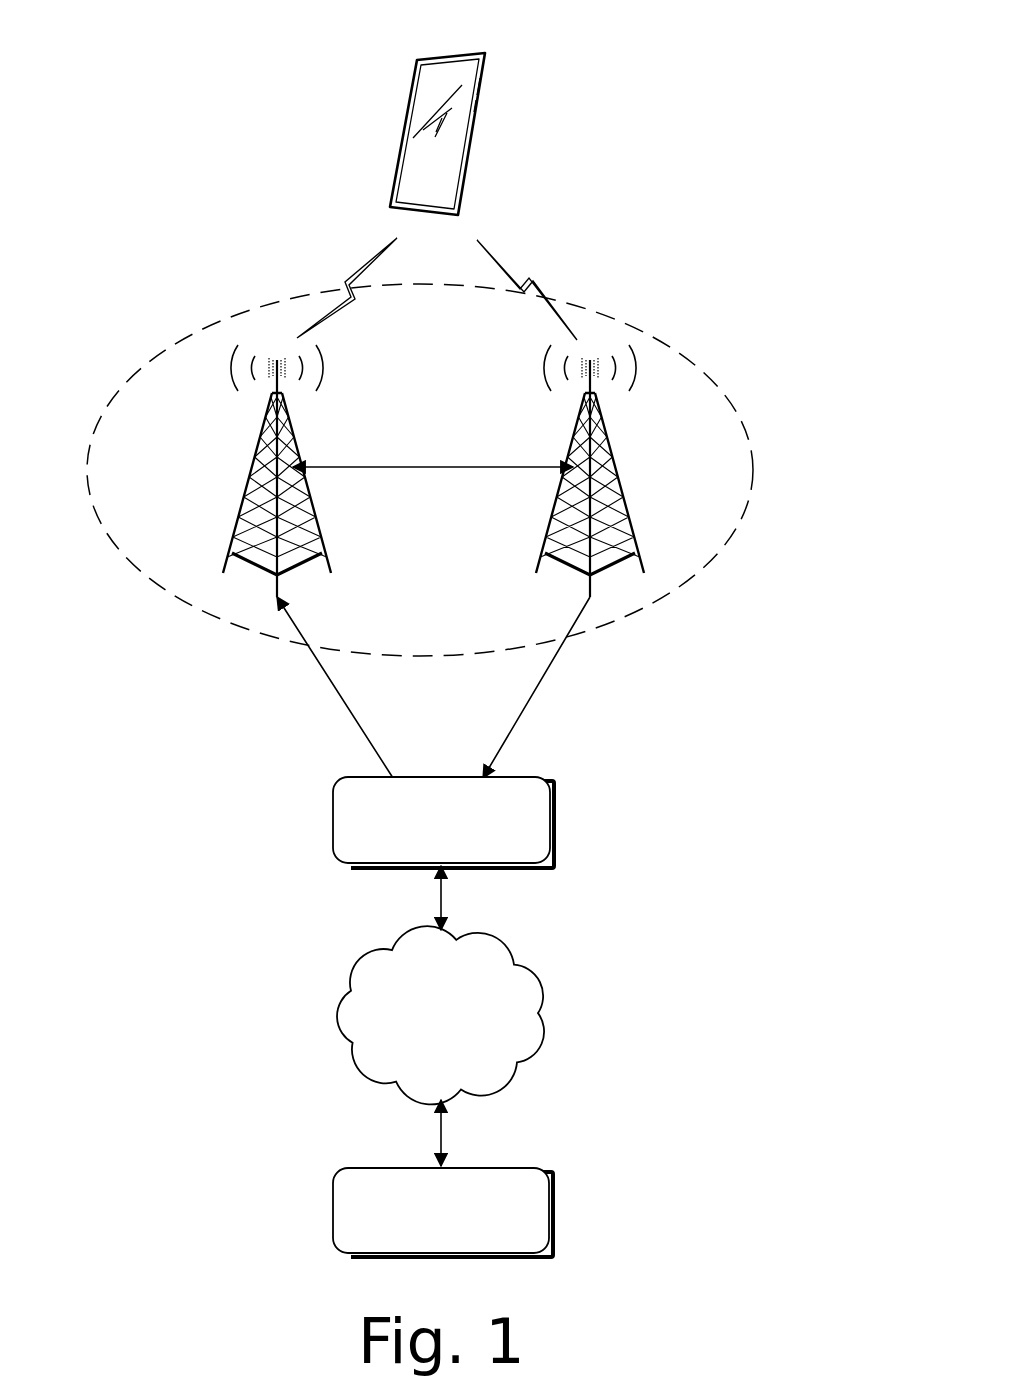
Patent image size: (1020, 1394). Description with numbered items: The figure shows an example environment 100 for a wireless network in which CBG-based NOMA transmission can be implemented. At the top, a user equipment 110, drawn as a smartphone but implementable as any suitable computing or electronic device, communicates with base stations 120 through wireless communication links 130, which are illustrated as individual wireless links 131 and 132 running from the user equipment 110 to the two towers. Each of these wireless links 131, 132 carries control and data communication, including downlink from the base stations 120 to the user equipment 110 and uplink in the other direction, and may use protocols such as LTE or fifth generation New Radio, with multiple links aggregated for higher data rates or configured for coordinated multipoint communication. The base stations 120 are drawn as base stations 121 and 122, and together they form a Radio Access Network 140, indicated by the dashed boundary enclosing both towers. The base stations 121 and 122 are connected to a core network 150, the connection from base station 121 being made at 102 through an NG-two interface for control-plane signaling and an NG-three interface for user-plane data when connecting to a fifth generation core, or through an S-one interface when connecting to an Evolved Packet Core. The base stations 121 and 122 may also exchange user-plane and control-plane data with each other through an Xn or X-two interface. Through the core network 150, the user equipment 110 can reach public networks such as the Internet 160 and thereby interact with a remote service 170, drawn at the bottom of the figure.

The environment 100 is at (773, 52).
The user equipment 110 is at (487, 54).
The wireless communication links 130 is at (538, 206).
The wireless link 131 is at (346, 266).
The wireless link 132 is at (521, 271).
The Radio Access Network 140 is at (731, 392).
The base stations 120 is at (409, 471).
The base station 121 is at (262, 446).
The base station 122 is at (603, 446).
The connection to core network 102 is at (399, 462).
The core network 150 is at (443, 822).
The Internet 160 is at (440, 1015).
The remote service 170 is at (443, 1212).